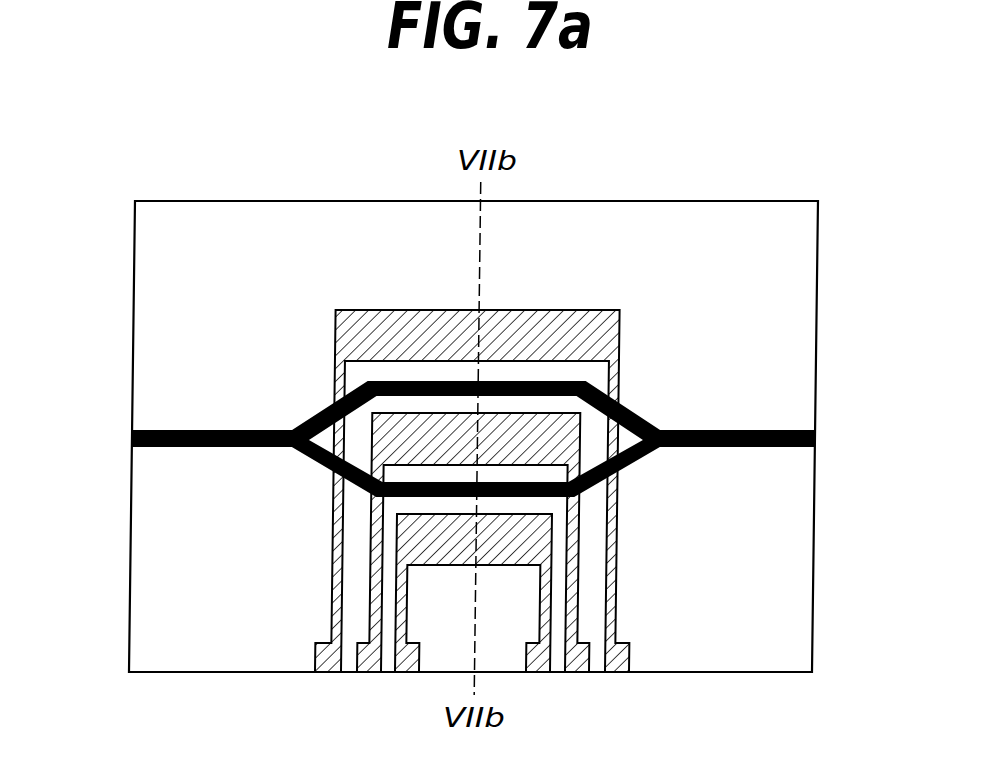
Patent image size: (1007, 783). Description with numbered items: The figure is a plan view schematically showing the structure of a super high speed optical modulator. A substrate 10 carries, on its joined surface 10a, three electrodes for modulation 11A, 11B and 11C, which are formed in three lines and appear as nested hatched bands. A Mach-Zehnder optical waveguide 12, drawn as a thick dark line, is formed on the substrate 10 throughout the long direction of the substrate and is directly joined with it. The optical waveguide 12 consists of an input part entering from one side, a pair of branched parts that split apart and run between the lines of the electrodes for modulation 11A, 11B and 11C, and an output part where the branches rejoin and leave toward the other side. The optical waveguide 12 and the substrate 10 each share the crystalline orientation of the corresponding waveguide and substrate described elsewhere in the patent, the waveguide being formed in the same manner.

The substrate 10 is at (770, 248).
The joined surface 10a is at (583, 233).
The electrode for modulation 11A is at (602, 327).
The electrode for modulation 11B is at (563, 442).
The electrode for modulation 11C is at (533, 547).
The Mach-Zehnder optical waveguide 12 is at (506, 413).